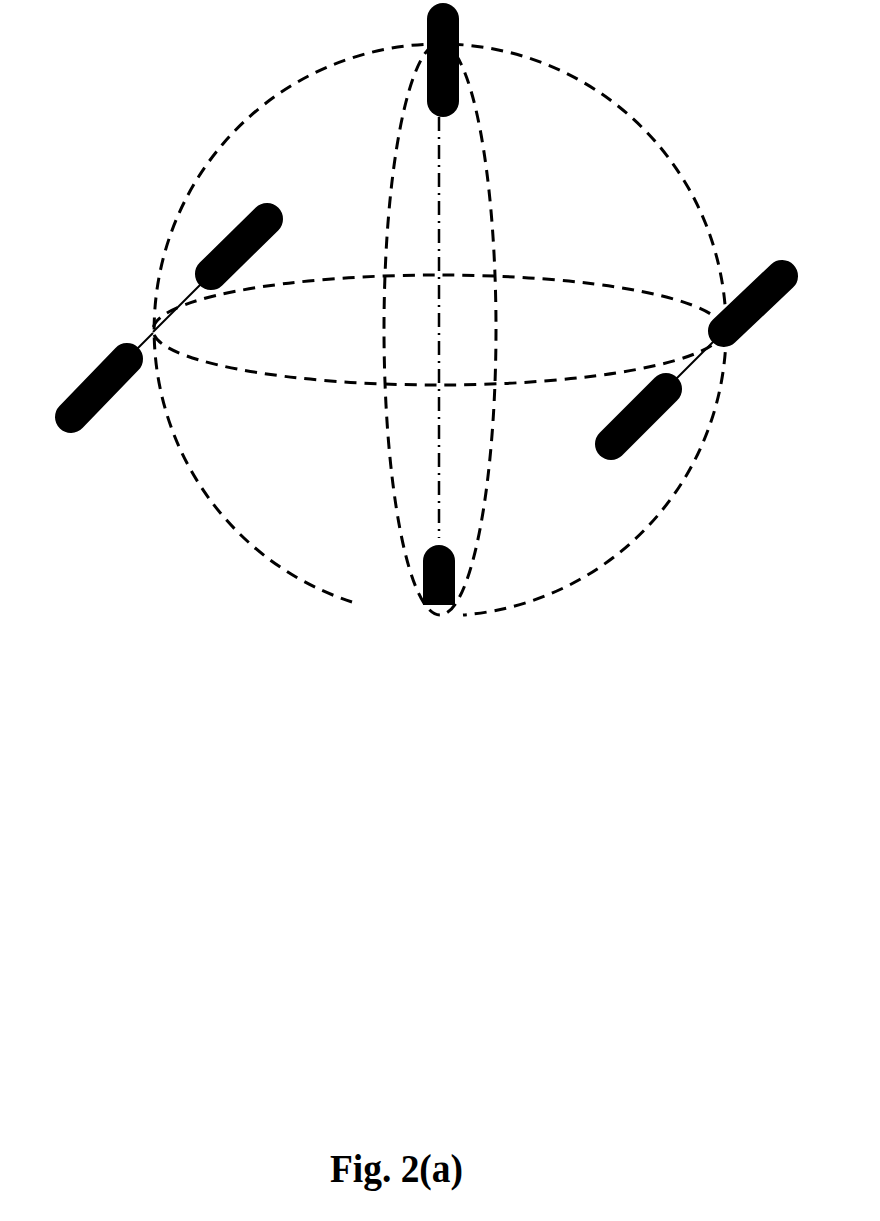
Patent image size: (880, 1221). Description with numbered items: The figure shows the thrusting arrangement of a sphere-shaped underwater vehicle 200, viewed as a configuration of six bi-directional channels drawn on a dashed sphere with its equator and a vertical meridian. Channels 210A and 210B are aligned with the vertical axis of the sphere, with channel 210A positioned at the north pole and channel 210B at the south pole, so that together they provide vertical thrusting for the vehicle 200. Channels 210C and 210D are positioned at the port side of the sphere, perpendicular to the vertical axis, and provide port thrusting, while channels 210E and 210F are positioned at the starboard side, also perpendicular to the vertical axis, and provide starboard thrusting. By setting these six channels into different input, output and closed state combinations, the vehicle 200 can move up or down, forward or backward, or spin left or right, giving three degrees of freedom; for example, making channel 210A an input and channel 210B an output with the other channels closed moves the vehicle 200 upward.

The vehicle 200 is at (103, 132).
The channel 210A is at (515, 78).
The channel 210B is at (505, 574).
The channel 210C is at (685, 406).
The channel 210D is at (770, 267).
The channel 210E is at (80, 370).
The channel 210F is at (238, 238).